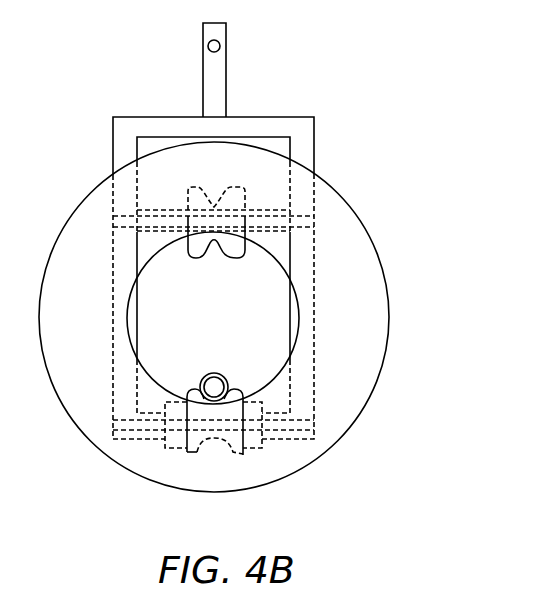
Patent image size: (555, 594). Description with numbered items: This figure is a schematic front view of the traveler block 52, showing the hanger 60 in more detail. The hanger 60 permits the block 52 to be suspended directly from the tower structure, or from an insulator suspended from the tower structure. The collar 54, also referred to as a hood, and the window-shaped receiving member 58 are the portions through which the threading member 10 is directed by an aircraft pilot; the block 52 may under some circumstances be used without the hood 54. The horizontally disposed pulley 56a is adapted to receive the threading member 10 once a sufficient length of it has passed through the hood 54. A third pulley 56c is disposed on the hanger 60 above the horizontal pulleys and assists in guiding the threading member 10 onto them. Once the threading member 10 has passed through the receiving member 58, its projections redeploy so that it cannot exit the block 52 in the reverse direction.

The threading member 10 is at (222, 362).
The traveler block 52 is at (405, 226).
The collar 54 is at (350, 207).
The window-shaped receiving member 58 is at (315, 295).
The hanger 60 is at (227, 60).
The horizontally disposed pulley 56a is at (193, 450).
The third pulley 56c is at (187, 199).